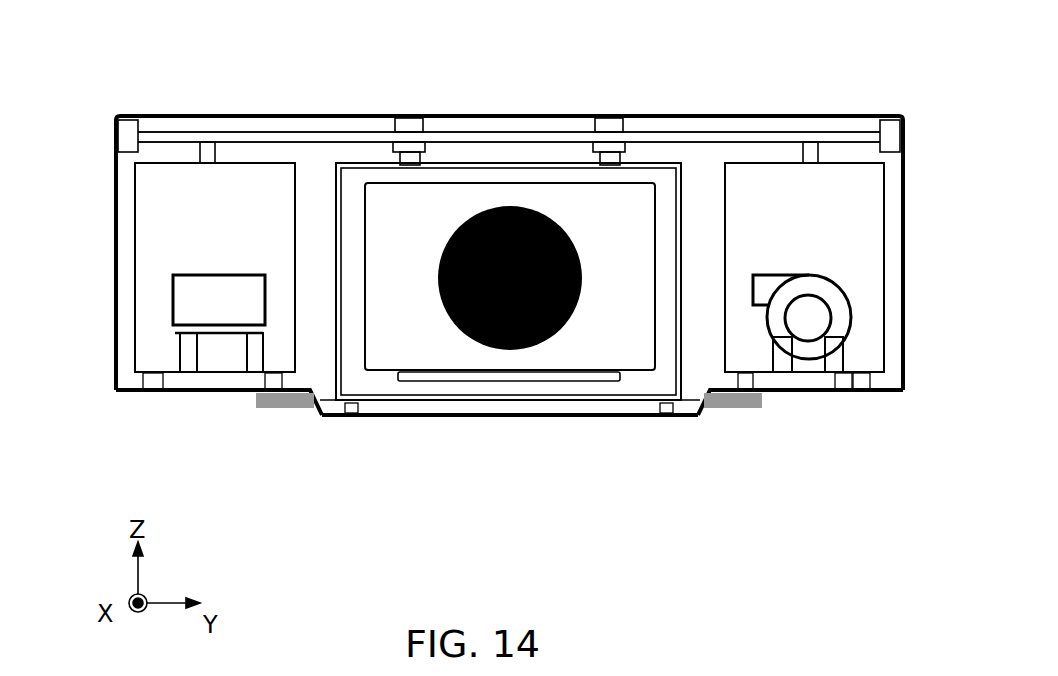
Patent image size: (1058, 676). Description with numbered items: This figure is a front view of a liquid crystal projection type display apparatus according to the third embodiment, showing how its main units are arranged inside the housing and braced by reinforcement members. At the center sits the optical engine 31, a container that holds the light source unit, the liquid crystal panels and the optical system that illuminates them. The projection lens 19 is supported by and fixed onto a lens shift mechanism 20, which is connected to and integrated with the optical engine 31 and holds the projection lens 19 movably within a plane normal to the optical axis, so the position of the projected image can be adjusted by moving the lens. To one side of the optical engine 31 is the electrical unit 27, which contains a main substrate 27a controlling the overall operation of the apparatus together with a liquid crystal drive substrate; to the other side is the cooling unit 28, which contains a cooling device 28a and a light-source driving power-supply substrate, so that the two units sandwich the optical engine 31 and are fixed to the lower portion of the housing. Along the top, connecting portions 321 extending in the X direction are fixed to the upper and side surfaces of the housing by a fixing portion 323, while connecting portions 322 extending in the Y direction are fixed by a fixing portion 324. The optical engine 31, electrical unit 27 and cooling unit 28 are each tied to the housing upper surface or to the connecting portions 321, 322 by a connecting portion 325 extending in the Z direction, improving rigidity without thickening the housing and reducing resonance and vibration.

The projection lens 19 is at (480, 340).
The lens shift mechanism 20 is at (542, 400).
The electrical unit 27 is at (172, 202).
The main substrate 27a is at (222, 305).
The cooling unit 28 is at (845, 235).
The cooling device 28a is at (780, 333).
The optical engine 31 is at (528, 165).
The connecting portion 321 is at (715, 135).
The connecting portion 322 is at (612, 160).
The fixing portion 323 is at (412, 125).
The fixing portion 324 is at (128, 138).
The connecting portion 325 is at (208, 160).